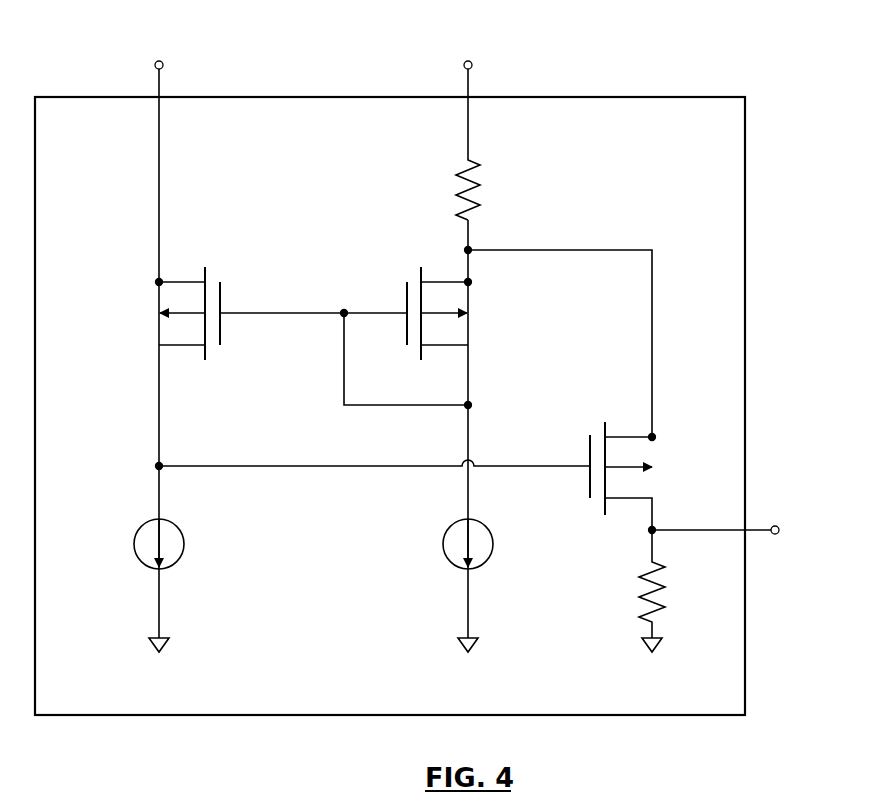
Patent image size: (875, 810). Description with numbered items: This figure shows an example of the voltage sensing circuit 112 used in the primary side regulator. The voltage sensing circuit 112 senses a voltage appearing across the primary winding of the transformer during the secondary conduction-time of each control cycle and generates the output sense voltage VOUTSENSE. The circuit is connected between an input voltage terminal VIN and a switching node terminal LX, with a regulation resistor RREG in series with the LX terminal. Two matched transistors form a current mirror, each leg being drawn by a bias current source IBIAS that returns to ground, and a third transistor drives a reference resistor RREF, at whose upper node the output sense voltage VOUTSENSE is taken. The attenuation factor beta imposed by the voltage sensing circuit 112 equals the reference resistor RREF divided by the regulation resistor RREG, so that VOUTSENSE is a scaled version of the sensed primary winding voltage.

The voltage sensing circuit 112 is at (594, 97).
The input voltage terminal VIN is at (157, 53).
The switching node terminal LX is at (467, 53).
The regulation resistor RREG is at (493, 188).
The reference resistor RREF is at (677, 598).
The bias current source IBIAS is at (295, 544).
The output sense voltage VOUTSENSE is at (754, 531).